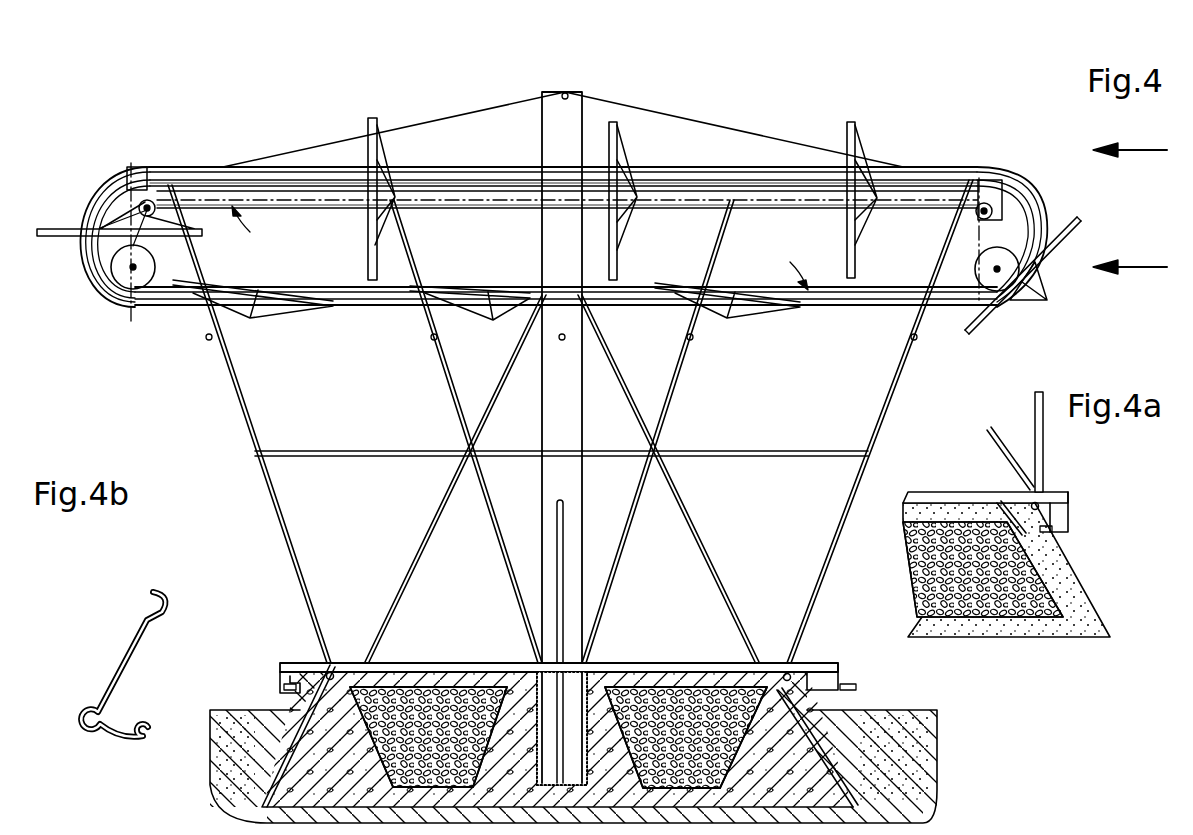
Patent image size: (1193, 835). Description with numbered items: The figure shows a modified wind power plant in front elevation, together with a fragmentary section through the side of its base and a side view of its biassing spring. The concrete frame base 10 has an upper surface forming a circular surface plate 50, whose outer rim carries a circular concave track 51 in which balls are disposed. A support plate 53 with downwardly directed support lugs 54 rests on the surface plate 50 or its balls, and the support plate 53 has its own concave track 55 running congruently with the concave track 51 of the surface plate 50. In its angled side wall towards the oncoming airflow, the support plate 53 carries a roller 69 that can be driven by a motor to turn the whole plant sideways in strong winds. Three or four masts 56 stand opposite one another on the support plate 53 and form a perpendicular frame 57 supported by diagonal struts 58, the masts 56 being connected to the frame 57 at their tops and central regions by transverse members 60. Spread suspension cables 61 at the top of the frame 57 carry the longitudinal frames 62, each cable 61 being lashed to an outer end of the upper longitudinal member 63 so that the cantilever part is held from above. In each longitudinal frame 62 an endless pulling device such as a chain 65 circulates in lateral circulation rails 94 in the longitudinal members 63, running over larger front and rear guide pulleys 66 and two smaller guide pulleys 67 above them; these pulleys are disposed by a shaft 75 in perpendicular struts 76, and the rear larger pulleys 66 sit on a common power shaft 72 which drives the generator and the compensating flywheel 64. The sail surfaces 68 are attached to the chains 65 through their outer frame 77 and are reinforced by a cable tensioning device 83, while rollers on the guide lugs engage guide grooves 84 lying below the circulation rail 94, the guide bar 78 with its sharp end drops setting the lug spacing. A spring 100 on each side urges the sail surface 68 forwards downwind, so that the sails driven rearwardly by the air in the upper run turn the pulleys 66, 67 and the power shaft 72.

In FIG. 4, the concrete frame base 10 is at (310, 772).
In FIG. 4, the surface plate 50 is at (657, 685).
In FIG. 4A, the surface plate 50 is at (905, 517).
In FIG. 4, the concave track 51 is at (300, 690).
In FIG. 4A, the concave track 51 is at (998, 500).
In FIG. 4, the support plate 53 is at (448, 663).
In FIG. 4A, the support plate 53 is at (930, 495).
In FIG. 4, the support lugs 54 is at (840, 680).
In FIG. 4A, the support lugs 54 is at (1070, 515).
In FIG. 4, the concave track 55 is at (326, 672).
In FIG. 4A, the concave track 55 is at (1040, 500).
In FIG. 4, the masts 56 is at (580, 437).
In FIG. 4, the perpendicular frame 57 is at (212, 437).
In FIG. 4, the diagonal struts 58 is at (435, 380).
In FIG. 4, the transverse members 60 is at (212, 338).
In FIG. 4, the spread suspension cables 61 is at (675, 135).
In FIG. 4, the longitudinal frames 62 is at (934, 170).
In FIG. 4, the upper longitudinal member 63 is at (200, 168).
In FIG. 4, the compensating flywheel 64 is at (222, 168).
In FIG. 4, the chain 65 is at (292, 212).
In FIG. 4, the larger guide pulleys 66 is at (105, 263).
In FIG. 4, the smaller guide pulleys 67 is at (148, 200).
In FIG. 4, the sail surfaces 68 is at (100, 225).
In FIG. 4, the roller 69 is at (283, 684).
In FIG. 4A, the roller 69 is at (1053, 532).
In FIG. 4, the power shaft 72 is at (135, 272).
In FIG. 4, the shaft 75 is at (120, 215).
In FIG. 4, the perpendicular struts 76 is at (125, 185).
In FIG. 4, the outer frame 77 is at (370, 120).
In FIG. 4, the guide bar 78 is at (500, 200).
In FIG. 4, the tensioning device 83 is at (390, 165).
In FIG. 4, the guide grooves 84 is at (482, 182).
In FIG. 4, the circulation rails 94 is at (518, 248).
In FIG. 4B, the spring 100 is at (127, 657).